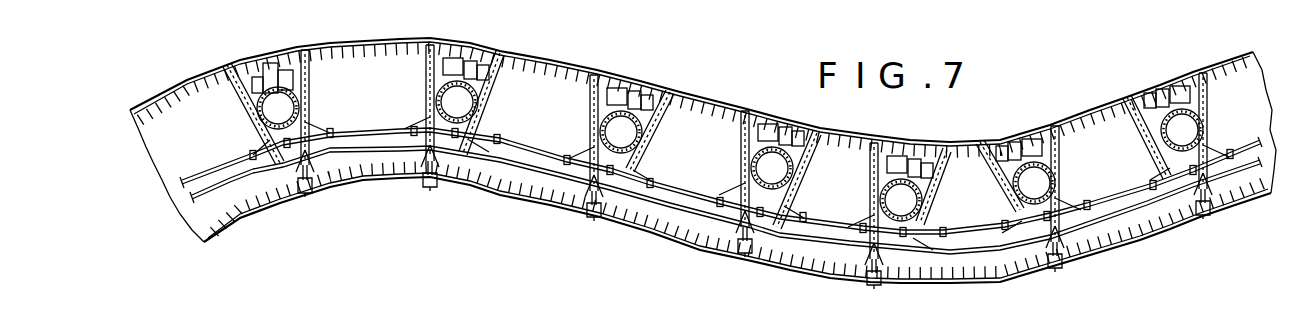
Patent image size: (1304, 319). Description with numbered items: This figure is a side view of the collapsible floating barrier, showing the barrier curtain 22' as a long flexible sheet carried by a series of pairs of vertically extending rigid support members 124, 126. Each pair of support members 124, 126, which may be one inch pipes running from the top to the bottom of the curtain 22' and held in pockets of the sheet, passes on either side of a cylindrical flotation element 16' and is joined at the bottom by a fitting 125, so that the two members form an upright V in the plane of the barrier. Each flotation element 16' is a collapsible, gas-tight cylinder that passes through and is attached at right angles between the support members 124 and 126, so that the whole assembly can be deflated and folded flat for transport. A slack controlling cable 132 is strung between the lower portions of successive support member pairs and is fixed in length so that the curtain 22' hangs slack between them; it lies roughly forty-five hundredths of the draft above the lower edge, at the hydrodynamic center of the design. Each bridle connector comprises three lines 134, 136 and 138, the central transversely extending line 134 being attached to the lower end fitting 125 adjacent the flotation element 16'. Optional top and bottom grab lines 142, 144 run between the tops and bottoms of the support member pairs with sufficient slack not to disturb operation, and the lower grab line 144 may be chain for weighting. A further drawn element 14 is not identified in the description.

The barrier curtain 22' is at (703, 140).
The top grab line 142 is at (289, 47).
The bottom grab line 144 is at (264, 210).
The upper guide rail 14 is at (528, 143).
The central transversely extending line 134 is at (477, 153).
The slack controlling cable 132 is at (233, 183).
The support member 124 is at (304, 97).
The fitting 125 is at (312, 184).
The support member 126 is at (252, 116).
The bridle connector line 136 is at (318, 128).
The bridle connector line 138 is at (248, 152).
The flotation element 16' is at (462, 118).